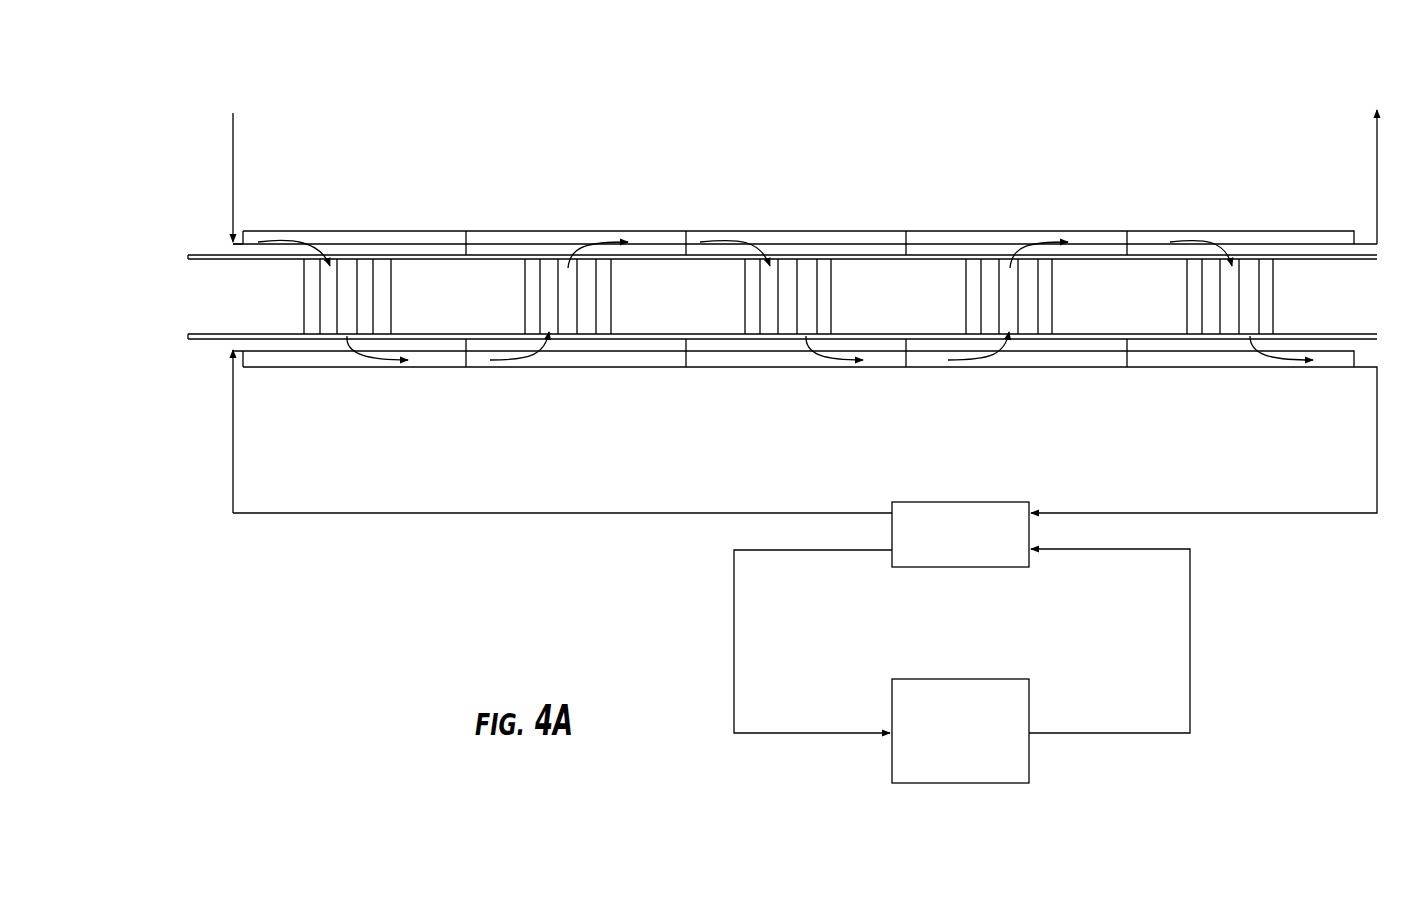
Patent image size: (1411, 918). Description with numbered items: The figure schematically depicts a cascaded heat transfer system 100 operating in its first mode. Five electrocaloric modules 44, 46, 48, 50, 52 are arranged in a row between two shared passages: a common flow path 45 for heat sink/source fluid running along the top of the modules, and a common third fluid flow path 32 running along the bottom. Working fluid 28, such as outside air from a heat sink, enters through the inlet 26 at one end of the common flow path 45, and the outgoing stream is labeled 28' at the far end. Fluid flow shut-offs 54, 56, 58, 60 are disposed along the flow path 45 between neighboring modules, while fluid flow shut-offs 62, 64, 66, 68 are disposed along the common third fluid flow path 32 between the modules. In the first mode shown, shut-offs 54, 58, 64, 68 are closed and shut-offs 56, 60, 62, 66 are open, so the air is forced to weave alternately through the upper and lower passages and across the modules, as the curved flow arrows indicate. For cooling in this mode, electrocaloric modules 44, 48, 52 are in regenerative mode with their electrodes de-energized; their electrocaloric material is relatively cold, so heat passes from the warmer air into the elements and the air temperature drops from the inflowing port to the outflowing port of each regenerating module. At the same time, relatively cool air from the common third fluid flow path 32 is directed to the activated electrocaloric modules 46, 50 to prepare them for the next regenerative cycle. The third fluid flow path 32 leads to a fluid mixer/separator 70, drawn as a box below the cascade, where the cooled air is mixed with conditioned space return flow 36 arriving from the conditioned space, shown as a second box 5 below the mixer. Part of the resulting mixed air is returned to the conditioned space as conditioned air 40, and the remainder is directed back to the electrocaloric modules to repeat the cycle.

The cascaded heat transfer system 100 is at (376, 70).
The inlet 26 is at (232, 244).
The fluid 28 is at (269, 177).
The first fluid outlet flow 28' is at (1338, 177).
The common third fluid flow path 32 is at (797, 367).
The conditioned space return flow 36 is at (1190, 638).
The conditioned air 40 is at (734, 635).
The electrocaloric module 44 is at (304, 292).
The common flow path for heat sink/source fluid 45 is at (792, 231).
The electrocaloric module 46 is at (525, 292).
The electrocaloric module 48 is at (745, 292).
The electrocaloric module 50 is at (966, 292).
The electrocaloric module 52 is at (1187, 292).
The fluid flow shut-off 54 is at (466, 240).
The fluid flow shut-off 56 is at (686, 240).
The fluid flow shut-off 58 is at (906, 240).
The fluid flow shut-off 60 is at (1127, 240).
The fluid flow shut-off 62 is at (466, 360).
The fluid flow shut-off 64 is at (686, 360).
The fluid flow shut-off 66 is at (906, 360).
The fluid flow shut-off 68 is at (1127, 360).
The fluid mixer/separator 70 is at (960, 567).
The battery / heat source 5 is at (960, 783).